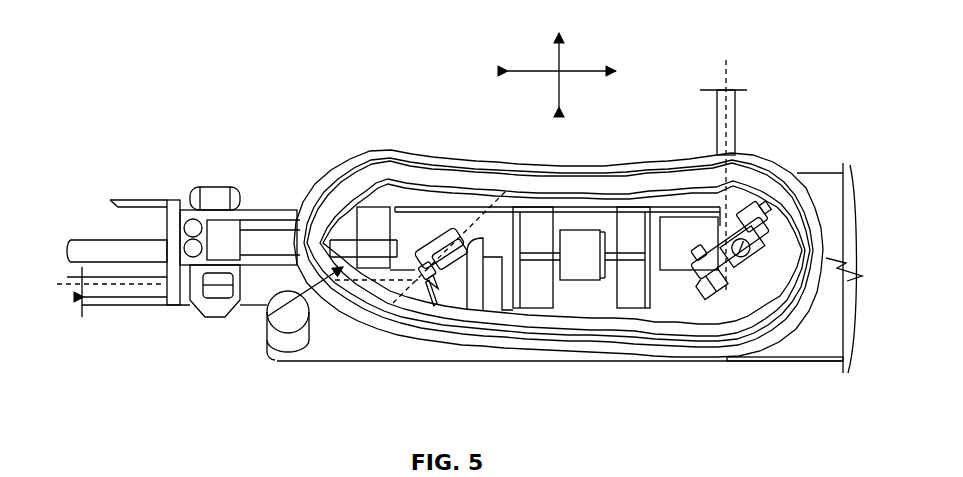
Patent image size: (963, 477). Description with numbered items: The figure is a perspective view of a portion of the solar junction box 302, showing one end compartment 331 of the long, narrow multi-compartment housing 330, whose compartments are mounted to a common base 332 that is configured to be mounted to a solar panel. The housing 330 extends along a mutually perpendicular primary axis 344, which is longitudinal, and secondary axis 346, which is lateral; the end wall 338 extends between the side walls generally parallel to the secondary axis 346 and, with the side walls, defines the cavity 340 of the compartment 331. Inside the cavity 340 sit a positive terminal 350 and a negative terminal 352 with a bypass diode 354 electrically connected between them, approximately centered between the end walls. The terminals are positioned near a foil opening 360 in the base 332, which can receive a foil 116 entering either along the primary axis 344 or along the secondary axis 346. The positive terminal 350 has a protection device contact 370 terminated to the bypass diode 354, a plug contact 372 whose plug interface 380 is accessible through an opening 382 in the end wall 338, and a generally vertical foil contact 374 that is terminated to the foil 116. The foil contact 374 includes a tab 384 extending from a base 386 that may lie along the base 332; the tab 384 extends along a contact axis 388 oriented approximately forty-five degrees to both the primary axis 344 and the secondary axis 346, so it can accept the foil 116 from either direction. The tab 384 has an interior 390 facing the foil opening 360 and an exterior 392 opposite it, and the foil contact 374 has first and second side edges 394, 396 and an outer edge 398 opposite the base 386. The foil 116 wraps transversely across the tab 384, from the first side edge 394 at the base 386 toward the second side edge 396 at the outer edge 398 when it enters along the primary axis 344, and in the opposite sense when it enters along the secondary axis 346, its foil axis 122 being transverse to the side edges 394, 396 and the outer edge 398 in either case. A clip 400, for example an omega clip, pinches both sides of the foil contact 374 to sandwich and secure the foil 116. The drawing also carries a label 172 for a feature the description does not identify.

The solar junction box 302 is at (438, 78).
The foil 116 is at (731, 138).
The foil axis 122 is at (57, 285).
The post 172 is at (737, 107).
The multi-compartment housing 330 is at (757, 351).
The compartment 331 is at (777, 338).
The base 332 is at (810, 343).
The end wall 338 is at (298, 204).
The cavity 340 is at (732, 302).
The primary axis 344 is at (601, 71).
The secondary axis 346 is at (560, 54).
The positive terminal 350 is at (386, 213).
The negative terminal 352 is at (640, 222).
The bypass diode 354 is at (583, 227).
The foil opening 360 is at (583, 305).
The protection device contact 370 is at (536, 226).
The plug contact 372 is at (352, 222).
The foil contact 374 is at (493, 233).
The plug interface 380 is at (272, 310).
The opening 382 is at (165, 228).
The tab 384 is at (463, 235).
The base 386 is at (413, 230).
The contact axis 388 is at (491, 204).
The interior 390 is at (428, 290).
The exterior 392 is at (381, 316).
The first side edge 394 is at (421, 290).
The second side edge 396 is at (470, 232).
The outer edge 398 is at (440, 273).
The clip 400 is at (448, 246).